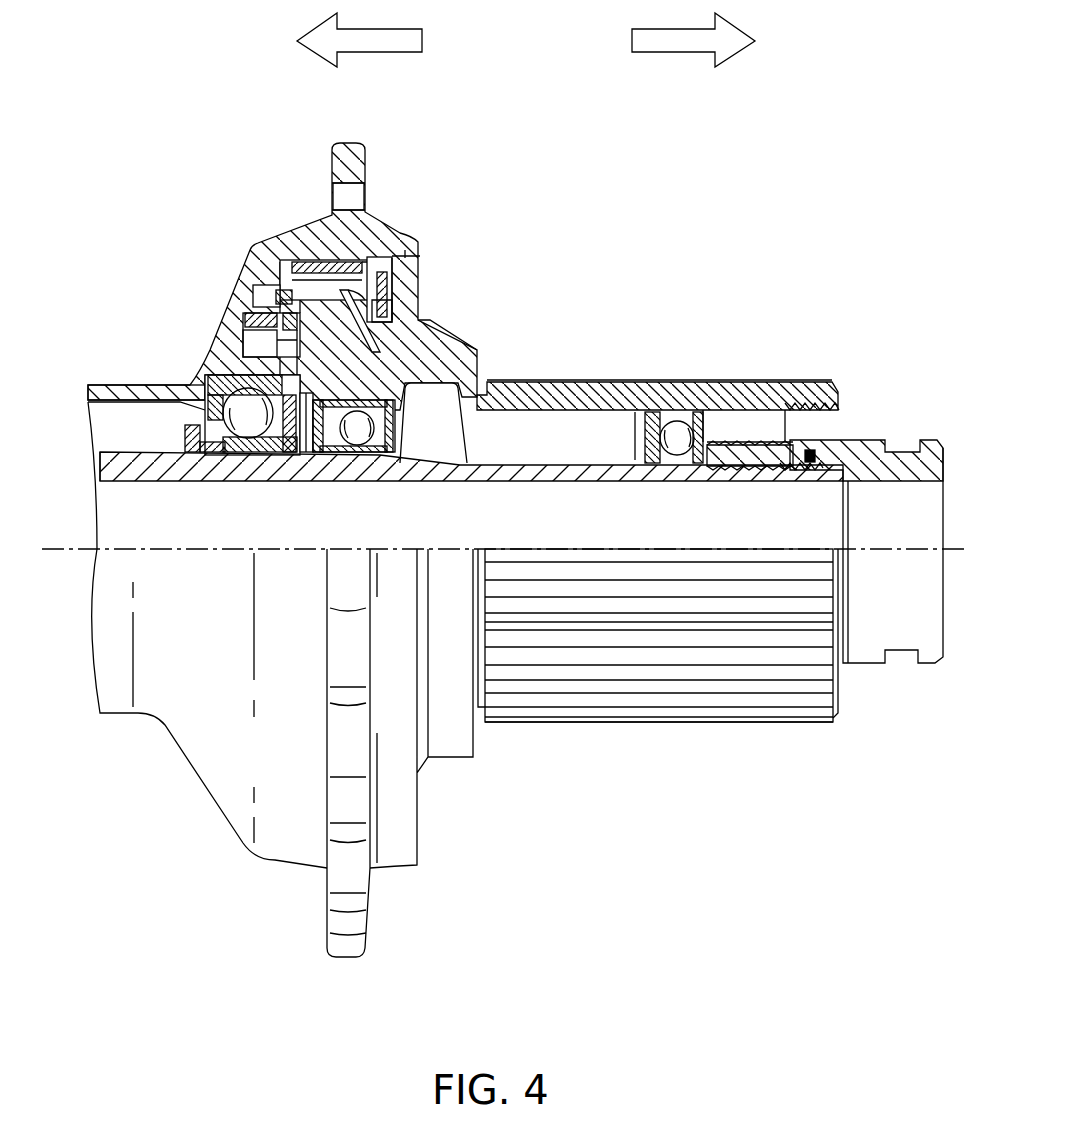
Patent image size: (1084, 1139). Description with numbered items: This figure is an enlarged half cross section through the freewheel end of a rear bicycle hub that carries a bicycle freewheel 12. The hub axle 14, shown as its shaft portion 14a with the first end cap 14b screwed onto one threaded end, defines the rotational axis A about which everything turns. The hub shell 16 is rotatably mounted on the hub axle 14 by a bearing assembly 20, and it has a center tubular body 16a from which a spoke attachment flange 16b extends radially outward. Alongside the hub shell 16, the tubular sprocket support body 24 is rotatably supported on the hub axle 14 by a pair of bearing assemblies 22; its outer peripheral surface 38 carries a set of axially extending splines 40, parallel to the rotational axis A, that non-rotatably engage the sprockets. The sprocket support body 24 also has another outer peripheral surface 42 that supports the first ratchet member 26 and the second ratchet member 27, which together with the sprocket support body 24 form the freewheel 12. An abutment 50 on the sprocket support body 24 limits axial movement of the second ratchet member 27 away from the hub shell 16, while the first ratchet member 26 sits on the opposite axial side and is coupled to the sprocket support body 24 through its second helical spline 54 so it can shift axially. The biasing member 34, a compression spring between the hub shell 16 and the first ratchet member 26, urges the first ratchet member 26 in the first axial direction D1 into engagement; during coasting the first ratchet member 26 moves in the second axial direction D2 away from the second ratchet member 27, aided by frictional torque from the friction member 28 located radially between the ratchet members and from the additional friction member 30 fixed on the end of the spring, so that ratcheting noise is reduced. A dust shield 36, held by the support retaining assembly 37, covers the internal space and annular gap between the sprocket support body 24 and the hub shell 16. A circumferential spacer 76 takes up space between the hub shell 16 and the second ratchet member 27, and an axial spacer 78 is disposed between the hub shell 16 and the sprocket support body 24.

The bicycle freewheel 12 is at (728, 784).
The hub axle 14 is at (522, 455).
The shaft portion 14a is at (132, 470).
The first end cap 14b is at (870, 440).
The hub shell 16 is at (150, 728).
The center tubular body 16a is at (107, 384).
The spoke attachment flange 16b is at (347, 144).
The bearing assembly 20 is at (250, 420).
The bearing assembly 22 is at (670, 438).
The sprocket support body 24 is at (577, 735).
The first ratchet member 26 is at (282, 356).
The second ratchet member 27 is at (378, 314).
The friction member 28 is at (261, 250).
The additional friction member 30 is at (285, 331).
The biasing member 34 is at (275, 297).
The dust shield 36 is at (395, 287).
The support retaining assembly 37 is at (432, 263).
The outer peripheral surface 38 is at (678, 622).
The axially extending spline 40 is at (770, 725).
The outer peripheral surface 42 is at (352, 360).
The abutment 50 is at (447, 342).
The second helical spline 54 is at (310, 433).
The circumferential spacer 76 is at (312, 263).
The axial spacer 78 is at (428, 343).
The rotational axis A is at (62, 549).
The first axial direction D1 is at (693, 33).
The second axial direction D2 is at (359, 33).